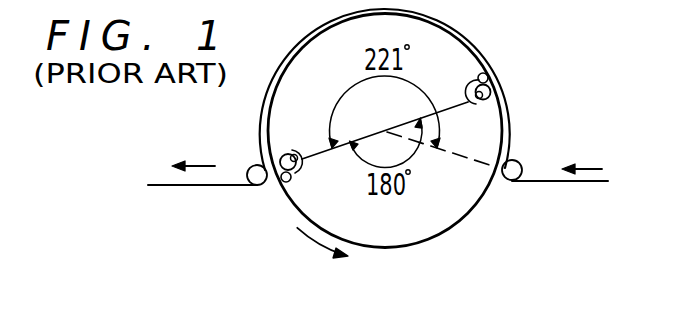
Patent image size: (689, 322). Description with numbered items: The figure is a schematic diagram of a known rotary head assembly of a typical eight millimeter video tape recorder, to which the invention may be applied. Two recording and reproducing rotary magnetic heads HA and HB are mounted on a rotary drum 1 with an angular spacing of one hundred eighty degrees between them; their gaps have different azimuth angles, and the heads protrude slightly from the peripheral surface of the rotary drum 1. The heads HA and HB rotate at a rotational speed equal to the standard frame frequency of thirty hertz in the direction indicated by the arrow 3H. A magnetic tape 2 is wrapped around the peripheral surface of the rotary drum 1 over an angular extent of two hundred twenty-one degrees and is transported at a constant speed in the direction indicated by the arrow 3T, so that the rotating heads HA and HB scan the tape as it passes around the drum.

The rotary drum 1 is at (472, 210).
The magnetic tape 2 is at (582, 183).
The arrow indicating tape transport direction 3T is at (198, 166).
The arrow indicating head rotation direction 3H is at (323, 246).
The rotary magnetic head HA is at (488, 74).
The rotary magnetic head HB is at (285, 190).